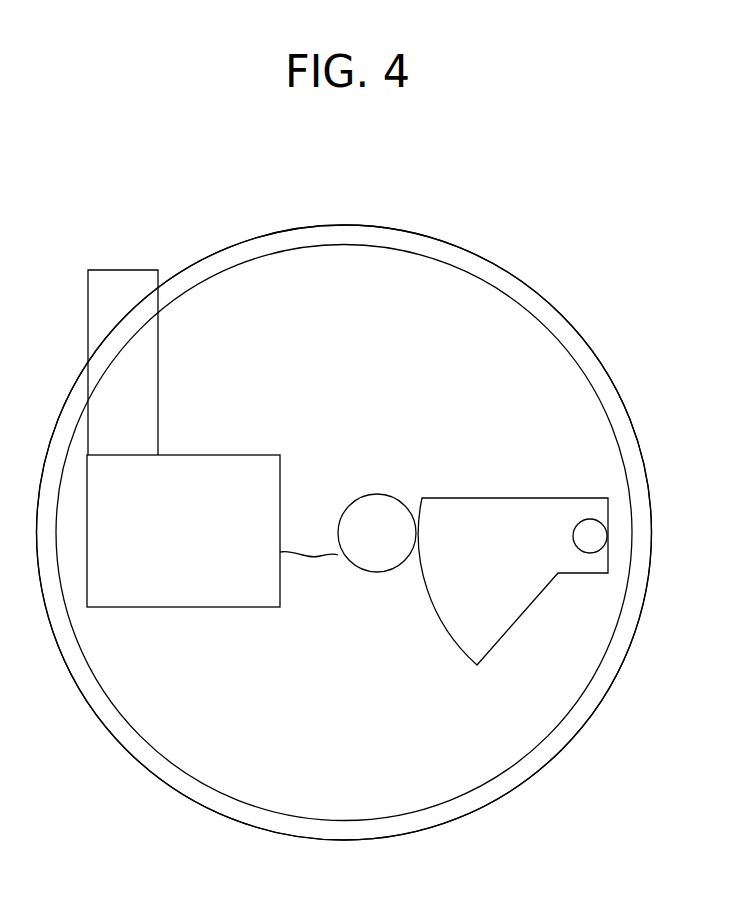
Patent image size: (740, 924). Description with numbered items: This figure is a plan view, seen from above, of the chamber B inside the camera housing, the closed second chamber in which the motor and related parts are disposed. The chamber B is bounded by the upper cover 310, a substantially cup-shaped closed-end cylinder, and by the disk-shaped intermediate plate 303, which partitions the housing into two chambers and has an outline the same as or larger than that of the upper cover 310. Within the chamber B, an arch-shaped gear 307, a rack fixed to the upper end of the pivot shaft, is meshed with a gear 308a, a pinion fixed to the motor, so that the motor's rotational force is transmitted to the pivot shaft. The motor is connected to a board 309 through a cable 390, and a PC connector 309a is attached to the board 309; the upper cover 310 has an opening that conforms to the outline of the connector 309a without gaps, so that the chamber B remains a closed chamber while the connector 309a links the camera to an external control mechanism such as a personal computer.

The intermediate plate 303 is at (390, 267).
The upper cover 310 is at (525, 300).
The arch-shaped gear 307 is at (528, 497).
The gear 308a is at (398, 495).
The board 309 is at (195, 608).
The PC connector 309a is at (125, 268).
The cable 390 is at (315, 555).
The chamber B is at (437, 772).